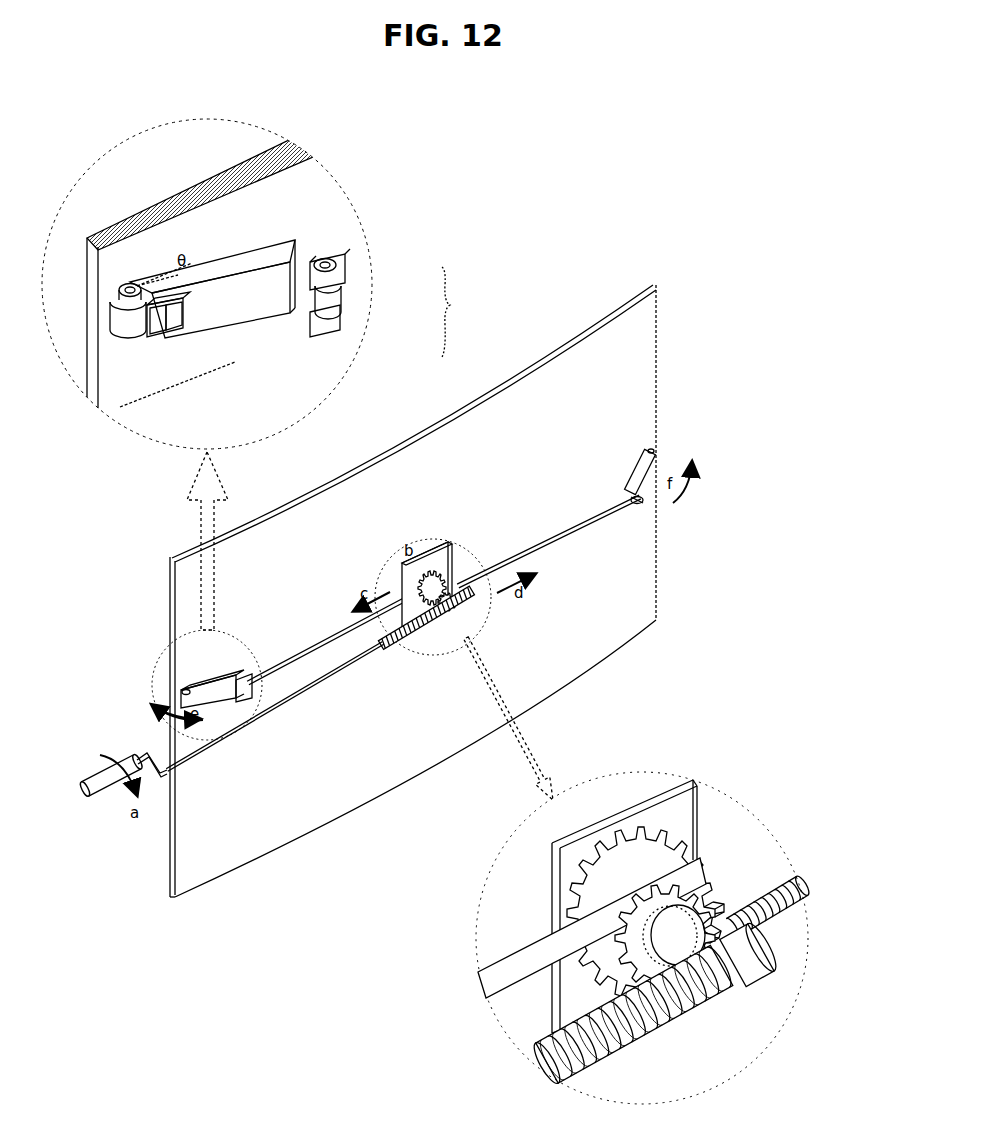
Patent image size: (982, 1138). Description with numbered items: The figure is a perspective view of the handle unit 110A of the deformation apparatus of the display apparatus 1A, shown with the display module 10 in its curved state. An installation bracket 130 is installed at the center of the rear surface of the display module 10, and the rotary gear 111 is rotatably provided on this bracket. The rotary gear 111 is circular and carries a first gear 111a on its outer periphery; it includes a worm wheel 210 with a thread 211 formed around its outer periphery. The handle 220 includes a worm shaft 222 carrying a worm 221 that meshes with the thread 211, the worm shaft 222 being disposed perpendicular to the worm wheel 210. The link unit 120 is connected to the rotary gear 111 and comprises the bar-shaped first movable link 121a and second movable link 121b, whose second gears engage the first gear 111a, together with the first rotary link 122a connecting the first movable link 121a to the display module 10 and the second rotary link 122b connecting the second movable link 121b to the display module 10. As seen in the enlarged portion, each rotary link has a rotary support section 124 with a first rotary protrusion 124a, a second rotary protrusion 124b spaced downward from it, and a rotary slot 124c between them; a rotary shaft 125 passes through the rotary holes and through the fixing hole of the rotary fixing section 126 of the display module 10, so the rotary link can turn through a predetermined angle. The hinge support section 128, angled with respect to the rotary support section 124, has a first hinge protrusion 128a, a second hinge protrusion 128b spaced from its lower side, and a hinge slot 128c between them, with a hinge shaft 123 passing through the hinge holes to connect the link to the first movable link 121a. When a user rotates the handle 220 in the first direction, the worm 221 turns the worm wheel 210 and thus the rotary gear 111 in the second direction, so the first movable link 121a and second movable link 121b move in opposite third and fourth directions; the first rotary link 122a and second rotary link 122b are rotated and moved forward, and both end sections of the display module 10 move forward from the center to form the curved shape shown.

The display module 10 is at (594, 322).
The display apparatus 1A is at (524, 200).
The handle unit 110A is at (462, 540).
The rotary gear 111 is at (724, 897).
The first gear 111a is at (800, 886).
The link unit 120 is at (273, 633).
The first movable link 121a is at (313, 647).
The second movable link 121b is at (540, 546).
The first rotary link 122a is at (222, 668).
The second rotary link 122b is at (640, 450).
The hinge shaft 123 is at (338, 260).
The rotary support section 124 is at (160, 352).
The first rotary protrusion 124a is at (125, 340).
The second rotary protrusion 124b is at (155, 338).
The rotary slot 124c is at (178, 327).
The rotary shaft 125 is at (118, 291).
The rotary fixing section 126 is at (133, 283).
The hinge support section 128 is at (463, 312).
The first hinge protrusion 128a is at (347, 270).
The second hinge protrusion 128b is at (350, 297).
The hinge slot 128c is at (343, 320).
The installation bracket 130 is at (428, 548).
The worm wheel 210 is at (627, 830).
The thread 211 is at (580, 880).
The handle 220 is at (287, 708).
The worm 221 is at (413, 652).
The worm shaft 222 is at (105, 797).